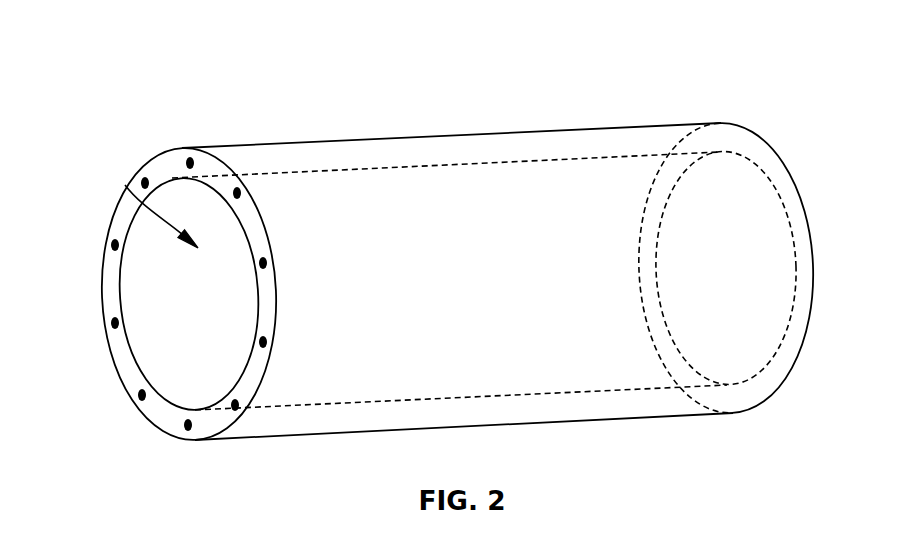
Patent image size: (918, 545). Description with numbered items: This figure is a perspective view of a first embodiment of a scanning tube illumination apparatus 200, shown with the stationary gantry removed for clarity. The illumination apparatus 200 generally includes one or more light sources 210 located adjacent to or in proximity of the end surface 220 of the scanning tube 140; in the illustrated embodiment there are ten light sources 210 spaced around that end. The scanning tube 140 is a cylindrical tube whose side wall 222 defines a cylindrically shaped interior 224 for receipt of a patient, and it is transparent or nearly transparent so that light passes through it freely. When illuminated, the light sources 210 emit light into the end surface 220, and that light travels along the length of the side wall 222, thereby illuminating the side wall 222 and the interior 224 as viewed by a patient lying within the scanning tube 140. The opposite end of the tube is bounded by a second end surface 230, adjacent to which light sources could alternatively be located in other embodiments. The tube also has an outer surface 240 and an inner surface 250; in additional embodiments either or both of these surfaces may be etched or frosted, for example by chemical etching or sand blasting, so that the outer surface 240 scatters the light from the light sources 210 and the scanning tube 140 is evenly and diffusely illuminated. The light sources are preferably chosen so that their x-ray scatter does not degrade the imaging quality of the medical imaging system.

The scanning tube illumination apparatus 200 is at (310, 78).
The scanning tube 140 is at (659, 127).
The outer surface 240 is at (433, 272).
The side wall 222 is at (563, 407).
The end surface 230 is at (778, 390).
The end surface 220 is at (218, 420).
The interior 224 is at (120, 205).
The light sources 210 is at (187, 425).
The inner surface 250 is at (146, 293).